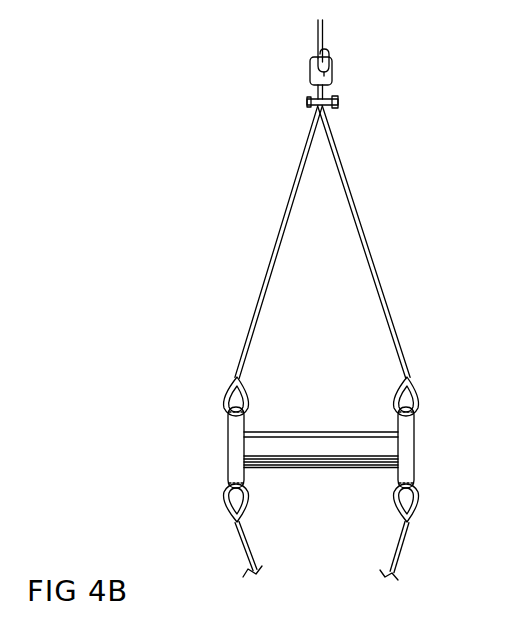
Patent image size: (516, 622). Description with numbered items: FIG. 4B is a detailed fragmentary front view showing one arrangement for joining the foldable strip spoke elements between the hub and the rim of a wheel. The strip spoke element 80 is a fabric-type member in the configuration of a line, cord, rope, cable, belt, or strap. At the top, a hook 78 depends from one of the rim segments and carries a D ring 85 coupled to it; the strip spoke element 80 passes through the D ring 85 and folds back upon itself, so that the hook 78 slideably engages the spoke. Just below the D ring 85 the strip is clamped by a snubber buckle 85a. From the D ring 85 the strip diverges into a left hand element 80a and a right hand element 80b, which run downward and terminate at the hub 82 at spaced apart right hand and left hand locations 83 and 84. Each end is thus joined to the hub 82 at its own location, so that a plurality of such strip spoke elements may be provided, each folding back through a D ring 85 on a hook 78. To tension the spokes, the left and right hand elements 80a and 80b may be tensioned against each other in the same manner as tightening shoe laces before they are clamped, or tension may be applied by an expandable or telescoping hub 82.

The hook 78 is at (323, 33).
The D ring 85 is at (333, 70).
The snubber buckle 85a is at (340, 102).
The strip spoke element 80 is at (344, 241).
The left hand element 80a is at (354, 200).
The right hand element 80b is at (294, 190).
The left hand location 84 is at (222, 392).
The right hand location 83 is at (424, 400).
The hub 82 is at (418, 457).